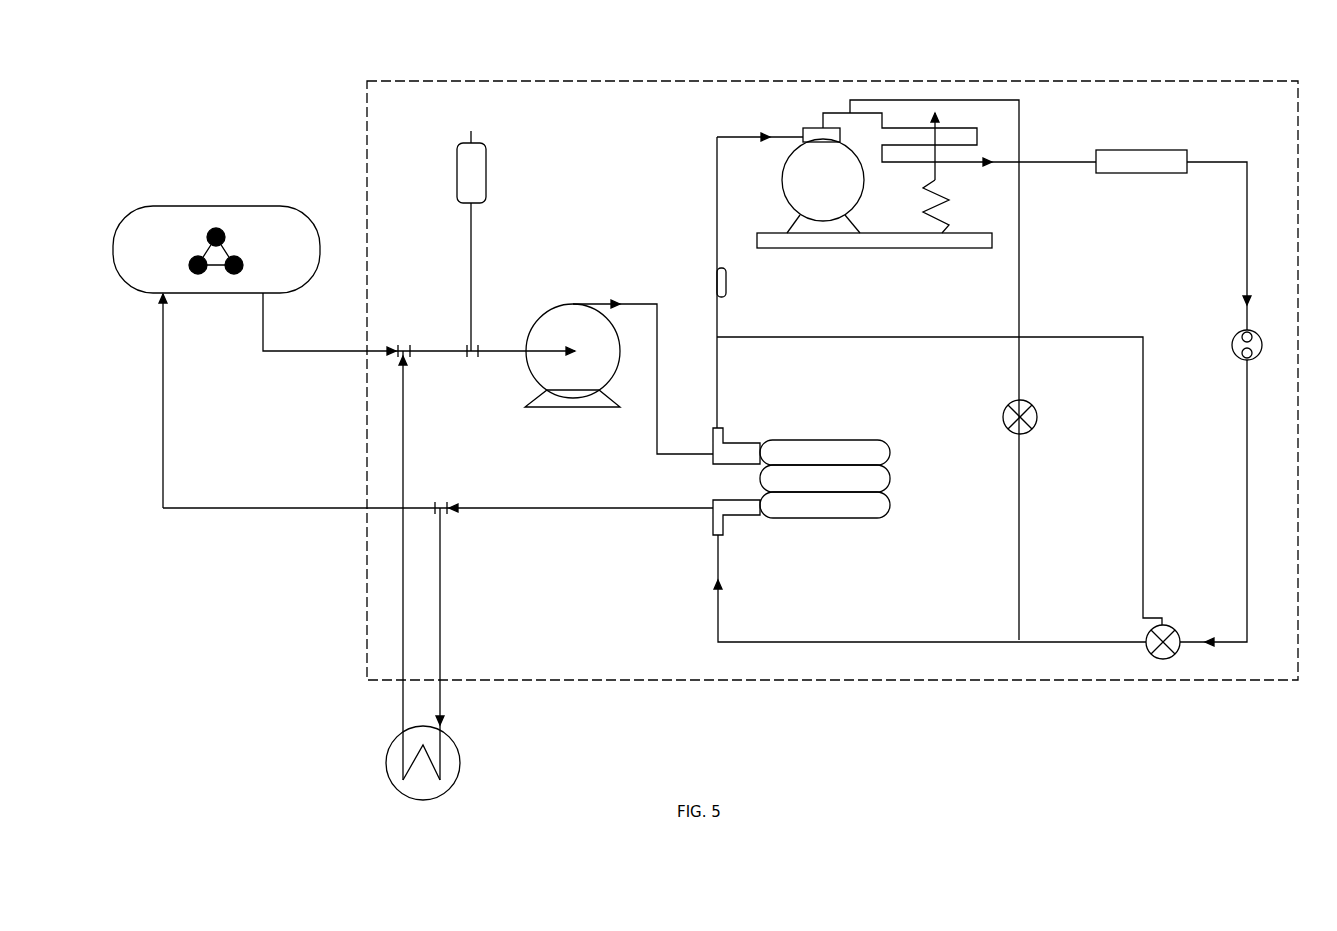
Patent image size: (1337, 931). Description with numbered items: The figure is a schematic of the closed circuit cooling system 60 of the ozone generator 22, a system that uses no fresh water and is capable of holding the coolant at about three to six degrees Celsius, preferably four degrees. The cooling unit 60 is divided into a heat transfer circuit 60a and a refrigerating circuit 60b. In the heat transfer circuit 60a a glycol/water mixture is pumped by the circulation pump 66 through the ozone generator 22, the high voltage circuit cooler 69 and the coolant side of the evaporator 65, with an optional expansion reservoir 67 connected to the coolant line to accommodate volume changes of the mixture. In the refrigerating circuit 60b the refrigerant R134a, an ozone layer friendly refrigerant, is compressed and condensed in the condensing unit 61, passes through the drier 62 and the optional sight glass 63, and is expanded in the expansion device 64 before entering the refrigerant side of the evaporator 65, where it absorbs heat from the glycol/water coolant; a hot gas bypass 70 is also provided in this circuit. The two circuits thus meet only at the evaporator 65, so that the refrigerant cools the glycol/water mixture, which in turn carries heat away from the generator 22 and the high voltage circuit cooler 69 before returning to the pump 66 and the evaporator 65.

The ozone generator 22 is at (344, 310).
The cooling system 60 is at (832, 352).
The heat transfer circuit 60a is at (438, 537).
The refrigerating circuit 60b is at (982, 491).
The condensing unit 61 is at (868, 370).
The drier 62 is at (1135, 240).
The sight glass 63 is at (1204, 317).
The expansion device 64 is at (1196, 648).
The evaporator 65 is at (929, 535).
The circulation pump 66 is at (617, 360).
The expansion reservoir 67 is at (503, 241).
The high voltage circuit cooler 69 is at (468, 575).
The hot gas bypass 70 is at (1050, 433).